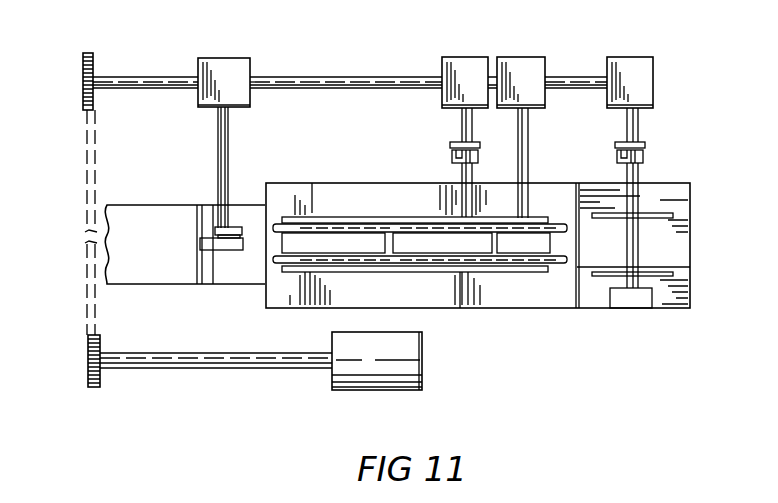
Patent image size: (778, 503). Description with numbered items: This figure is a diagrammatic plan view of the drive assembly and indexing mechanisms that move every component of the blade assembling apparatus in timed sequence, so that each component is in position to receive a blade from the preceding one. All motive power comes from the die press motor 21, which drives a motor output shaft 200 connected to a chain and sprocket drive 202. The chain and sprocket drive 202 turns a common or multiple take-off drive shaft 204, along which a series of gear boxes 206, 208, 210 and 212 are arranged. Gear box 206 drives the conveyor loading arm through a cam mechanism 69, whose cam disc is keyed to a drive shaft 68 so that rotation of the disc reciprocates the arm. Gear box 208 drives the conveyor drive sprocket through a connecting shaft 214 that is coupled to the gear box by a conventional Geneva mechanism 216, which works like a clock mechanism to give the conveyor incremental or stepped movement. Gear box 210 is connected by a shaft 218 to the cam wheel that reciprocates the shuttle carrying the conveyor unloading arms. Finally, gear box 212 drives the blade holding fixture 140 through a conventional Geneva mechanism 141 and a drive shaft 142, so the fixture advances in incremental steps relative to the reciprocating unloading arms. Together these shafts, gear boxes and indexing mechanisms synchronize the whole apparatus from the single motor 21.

The motor 21 is at (368, 368).
The drive shaft 68 is at (224, 132).
The cam mechanism 69 is at (240, 227).
The blade holding fixture 140 is at (660, 213).
The Geneva mechanism 141 is at (651, 144).
The drive shaft 142 is at (640, 173).
The motor output shaft 200 is at (266, 360).
The chain and sprocket drive 202 is at (82, 270).
The common take-off drive shaft 204 is at (123, 78).
The gear box 206 is at (222, 64).
The gear box 208 is at (460, 64).
The gear box 210 is at (521, 64).
The gear box 212 is at (636, 64).
The connecting shaft 214 is at (468, 196).
The Geneva mechanism 216 is at (449, 153).
The shaft 218 is at (530, 162).